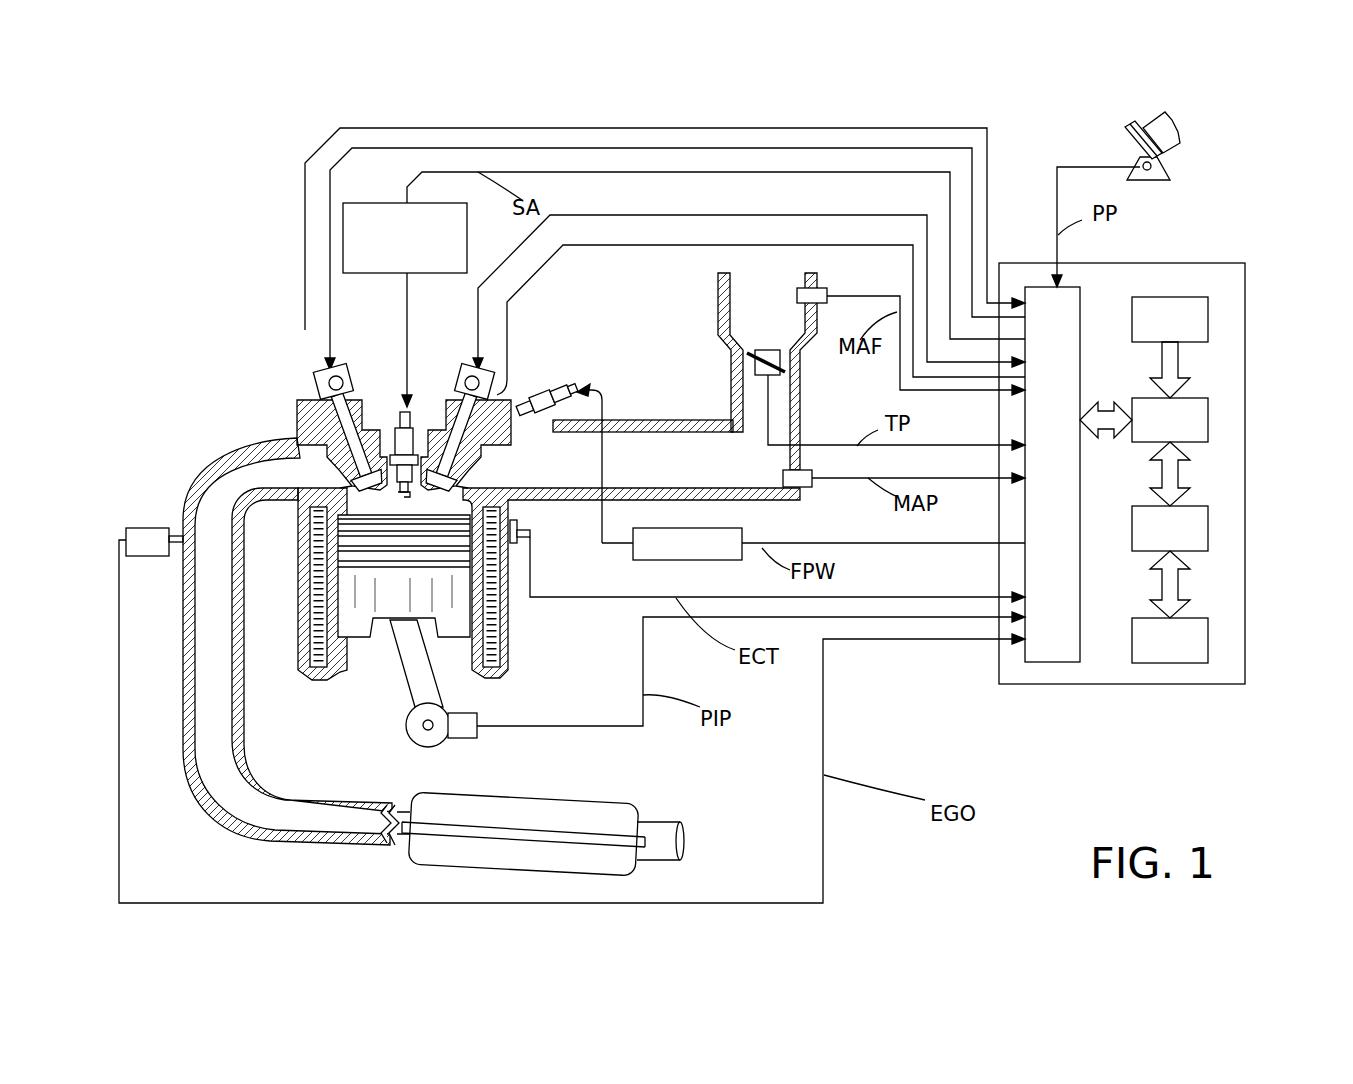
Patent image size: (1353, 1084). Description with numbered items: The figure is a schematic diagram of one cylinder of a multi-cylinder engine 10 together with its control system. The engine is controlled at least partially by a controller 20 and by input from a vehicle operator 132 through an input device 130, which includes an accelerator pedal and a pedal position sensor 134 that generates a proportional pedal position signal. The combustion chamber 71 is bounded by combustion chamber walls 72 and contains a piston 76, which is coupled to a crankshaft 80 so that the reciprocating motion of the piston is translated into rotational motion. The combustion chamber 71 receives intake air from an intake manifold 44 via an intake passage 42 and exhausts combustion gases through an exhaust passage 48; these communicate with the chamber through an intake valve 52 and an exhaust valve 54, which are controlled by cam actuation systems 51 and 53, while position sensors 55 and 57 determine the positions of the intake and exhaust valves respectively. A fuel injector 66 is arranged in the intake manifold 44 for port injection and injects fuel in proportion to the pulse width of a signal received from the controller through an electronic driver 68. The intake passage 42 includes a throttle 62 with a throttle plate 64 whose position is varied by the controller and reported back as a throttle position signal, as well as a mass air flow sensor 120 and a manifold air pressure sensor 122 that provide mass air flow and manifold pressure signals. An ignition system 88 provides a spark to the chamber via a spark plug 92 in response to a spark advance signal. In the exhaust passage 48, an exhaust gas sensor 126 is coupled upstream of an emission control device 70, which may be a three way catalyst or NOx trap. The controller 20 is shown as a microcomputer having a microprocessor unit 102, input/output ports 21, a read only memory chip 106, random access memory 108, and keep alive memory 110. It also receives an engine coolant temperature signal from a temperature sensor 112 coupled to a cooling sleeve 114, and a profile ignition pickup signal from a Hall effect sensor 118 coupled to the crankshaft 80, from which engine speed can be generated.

The engine 10 is at (222, 345).
The controller 20 is at (1245, 270).
The input/output ports 21 is at (1082, 298).
The intake passage 42 is at (767, 371).
The intake manifold 44 is at (643, 447).
The exhaust passage 48 is at (287, 641).
The cam actuation system 51 is at (463, 372).
The intake valve 52 is at (450, 484).
The cam actuation system 53 is at (344, 370).
The exhaust valve 54 is at (350, 483).
The position sensor 55 is at (495, 393).
The position sensor 57 is at (324, 388).
The throttle 62 is at (778, 357).
The throttle plate 64 is at (745, 358).
The fuel injector 66 is at (548, 403).
The electronic driver 68 is at (662, 560).
The emission control device 70 is at (597, 802).
The combustion chamber 71 is at (403, 508).
The combustion chamber walls 72 is at (343, 673).
The piston 76 is at (407, 610).
The crankshaft 80 is at (420, 745).
The ignition system 88 is at (355, 203).
The spark plug 92 is at (408, 407).
The microprocessor unit 102 is at (1210, 415).
The read only memory chip 106 is at (1210, 313).
The random access memory 108 is at (1210, 528).
The keep alive memory 110 is at (1210, 640).
The temperature sensor 112 is at (533, 538).
The cooling sleeve 114 is at (492, 618).
The Hall effect sensor 118 is at (460, 740).
The mass air flow sensor 120 is at (822, 292).
The manifold air pressure sensor 122 is at (810, 488).
The exhaust gas sensor 126 is at (126, 535).
The input device 130 is at (1127, 143).
The vehicle operator 132 is at (1185, 122).
The pedal position sensor 134 is at (1158, 167).